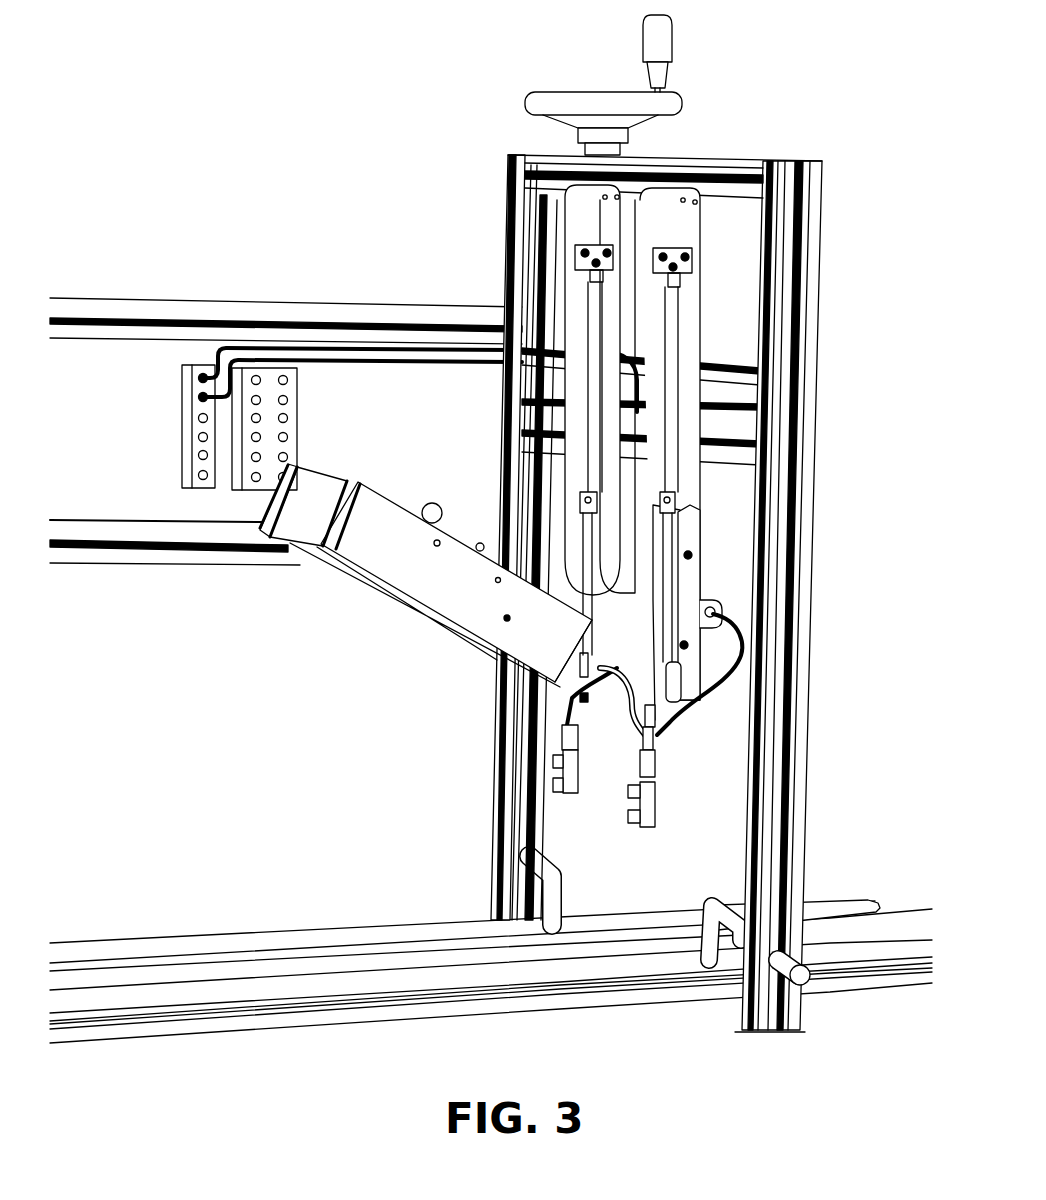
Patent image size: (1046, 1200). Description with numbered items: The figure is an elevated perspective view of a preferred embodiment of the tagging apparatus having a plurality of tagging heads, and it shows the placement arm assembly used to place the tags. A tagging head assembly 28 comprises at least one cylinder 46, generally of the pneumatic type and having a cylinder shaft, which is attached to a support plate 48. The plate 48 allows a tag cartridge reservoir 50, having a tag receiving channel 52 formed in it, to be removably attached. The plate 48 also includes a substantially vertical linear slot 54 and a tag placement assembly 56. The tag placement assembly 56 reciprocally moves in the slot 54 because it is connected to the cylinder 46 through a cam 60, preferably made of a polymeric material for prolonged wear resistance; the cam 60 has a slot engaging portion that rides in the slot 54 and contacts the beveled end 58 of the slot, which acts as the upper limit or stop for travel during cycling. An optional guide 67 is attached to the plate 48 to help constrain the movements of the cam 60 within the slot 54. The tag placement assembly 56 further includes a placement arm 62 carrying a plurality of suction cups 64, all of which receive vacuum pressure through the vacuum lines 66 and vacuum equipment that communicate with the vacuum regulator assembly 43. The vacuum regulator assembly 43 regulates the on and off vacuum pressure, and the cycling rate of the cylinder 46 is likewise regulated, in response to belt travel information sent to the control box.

The tagging head assembly 28 is at (693, 180).
The vacuum regulator assembly 43 is at (205, 362).
The cylinder 46 is at (672, 418).
The support plate 48 is at (625, 625).
The tag cartridge reservoir 50 is at (397, 582).
The tag receiving channel 52 is at (330, 538).
The linear slot 54 is at (660, 560).
The tag placement assembly 56 is at (658, 778).
The beveled end 58 is at (657, 517).
The cam 60 is at (676, 680).
The placement arm 62 is at (650, 848).
The suction cups 64 is at (632, 818).
The vacuum lines 66 is at (697, 600).
The guide 67 is at (697, 697).